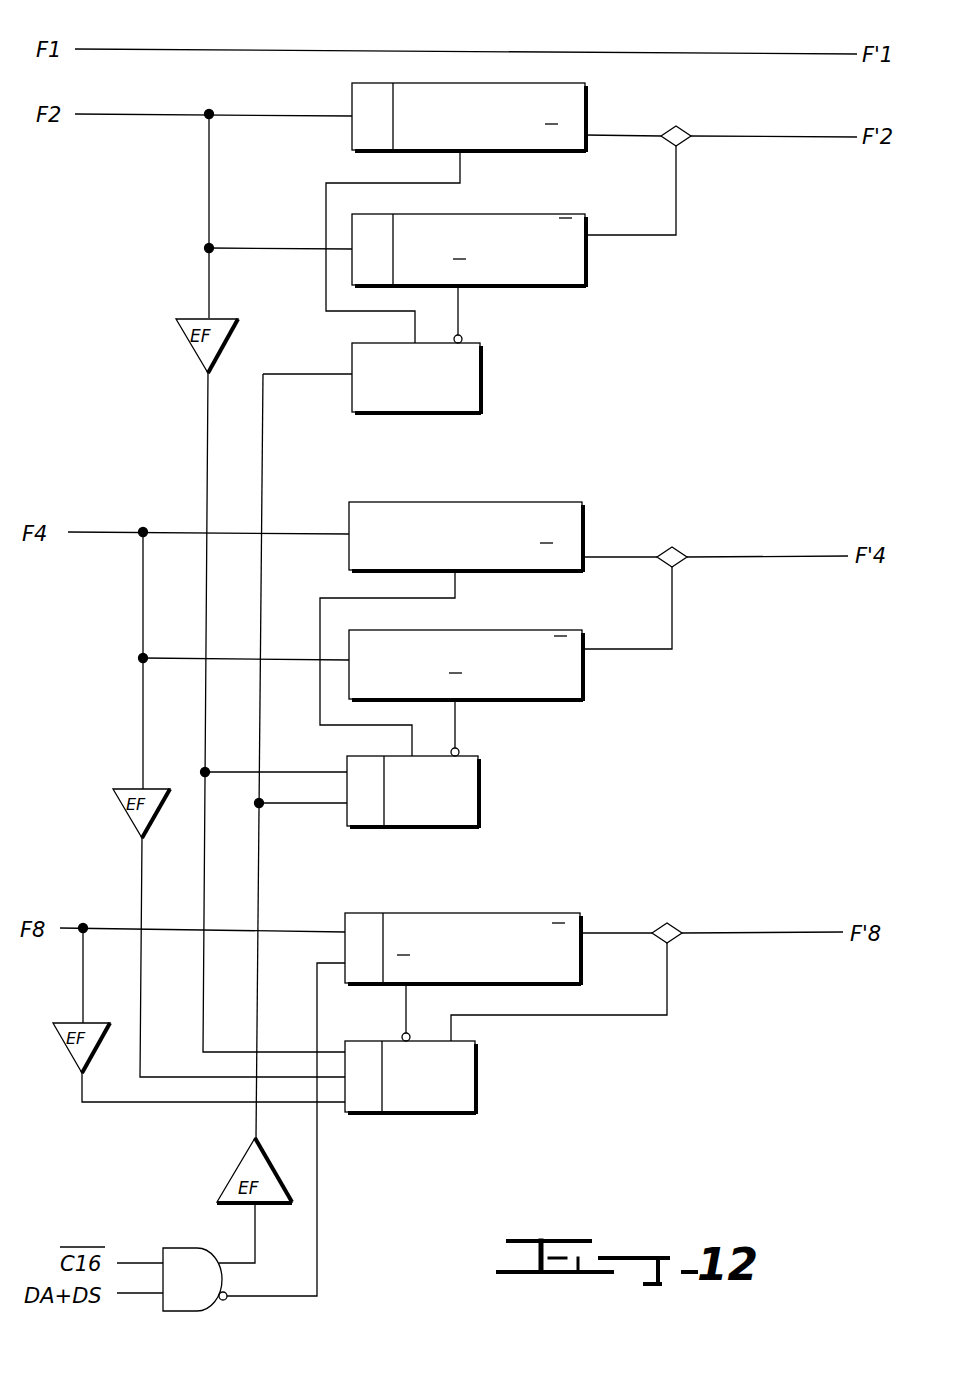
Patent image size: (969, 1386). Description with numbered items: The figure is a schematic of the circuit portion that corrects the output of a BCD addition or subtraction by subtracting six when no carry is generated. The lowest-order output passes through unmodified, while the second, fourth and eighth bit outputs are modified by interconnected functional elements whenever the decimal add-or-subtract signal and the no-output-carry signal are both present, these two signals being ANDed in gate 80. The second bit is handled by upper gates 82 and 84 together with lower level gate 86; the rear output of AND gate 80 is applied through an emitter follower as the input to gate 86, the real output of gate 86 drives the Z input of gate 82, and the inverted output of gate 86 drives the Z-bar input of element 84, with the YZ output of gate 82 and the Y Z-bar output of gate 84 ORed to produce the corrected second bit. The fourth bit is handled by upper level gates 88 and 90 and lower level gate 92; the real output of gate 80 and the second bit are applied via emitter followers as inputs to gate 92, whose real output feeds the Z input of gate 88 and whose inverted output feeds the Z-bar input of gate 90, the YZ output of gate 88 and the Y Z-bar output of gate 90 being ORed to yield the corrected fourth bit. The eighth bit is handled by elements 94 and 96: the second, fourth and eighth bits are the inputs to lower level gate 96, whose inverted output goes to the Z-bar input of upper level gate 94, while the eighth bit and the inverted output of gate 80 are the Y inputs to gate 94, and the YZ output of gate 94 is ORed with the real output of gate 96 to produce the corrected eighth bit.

The AND gate 80 is at (203, 1312).
The upper gate 82 is at (566, 84).
The upper gate 84 is at (566, 215).
The lower level gate 86 is at (483, 356).
The upper level gate 88 is at (552, 502).
The upper level gate 90 is at (552, 630).
The lower level gate 92 is at (480, 760).
The upper level gate 94 is at (542, 913).
The lower level gate 96 is at (478, 1051).